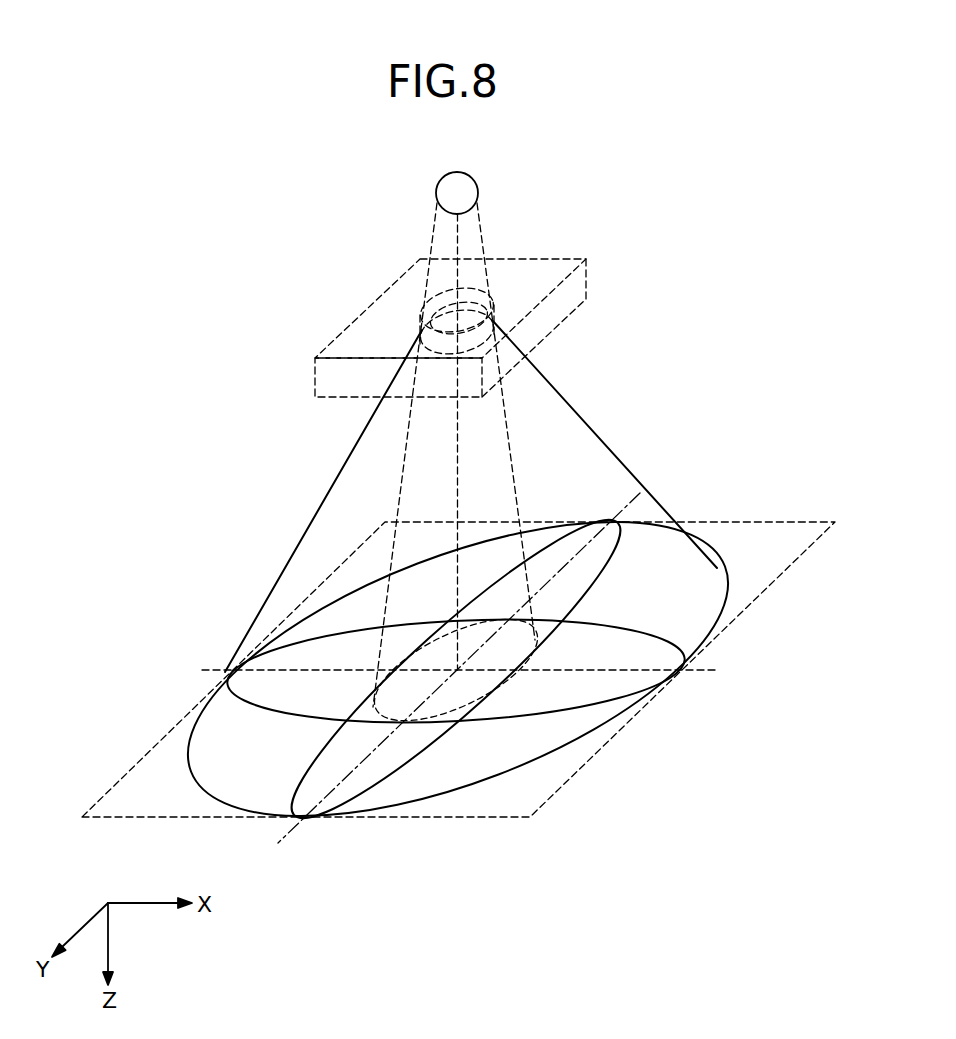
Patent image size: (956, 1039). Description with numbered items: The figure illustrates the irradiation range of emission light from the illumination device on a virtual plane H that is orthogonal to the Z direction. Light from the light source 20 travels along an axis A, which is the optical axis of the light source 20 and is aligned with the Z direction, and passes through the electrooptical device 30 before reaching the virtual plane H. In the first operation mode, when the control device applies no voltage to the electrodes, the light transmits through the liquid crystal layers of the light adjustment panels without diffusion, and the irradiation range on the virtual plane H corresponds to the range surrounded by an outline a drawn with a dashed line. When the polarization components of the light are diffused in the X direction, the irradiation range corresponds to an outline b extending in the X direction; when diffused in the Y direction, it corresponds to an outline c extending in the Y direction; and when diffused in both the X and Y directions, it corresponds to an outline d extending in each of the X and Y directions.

The light source 20 is at (478, 181).
The axis A is at (458, 233).
The electrooptical device 30 is at (587, 277).
The virtual plane H is at (732, 520).
The outline a is at (372, 706).
The outline b is at (670, 637).
The outline c is at (297, 772).
The outline d is at (728, 587).